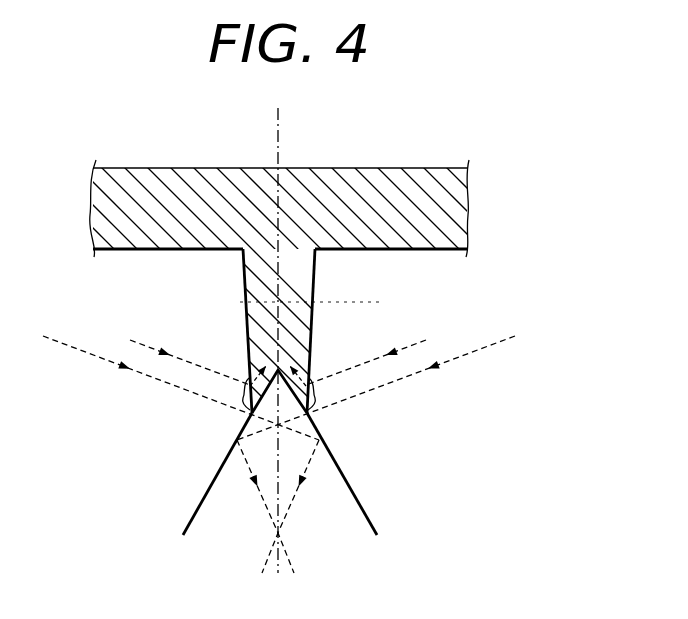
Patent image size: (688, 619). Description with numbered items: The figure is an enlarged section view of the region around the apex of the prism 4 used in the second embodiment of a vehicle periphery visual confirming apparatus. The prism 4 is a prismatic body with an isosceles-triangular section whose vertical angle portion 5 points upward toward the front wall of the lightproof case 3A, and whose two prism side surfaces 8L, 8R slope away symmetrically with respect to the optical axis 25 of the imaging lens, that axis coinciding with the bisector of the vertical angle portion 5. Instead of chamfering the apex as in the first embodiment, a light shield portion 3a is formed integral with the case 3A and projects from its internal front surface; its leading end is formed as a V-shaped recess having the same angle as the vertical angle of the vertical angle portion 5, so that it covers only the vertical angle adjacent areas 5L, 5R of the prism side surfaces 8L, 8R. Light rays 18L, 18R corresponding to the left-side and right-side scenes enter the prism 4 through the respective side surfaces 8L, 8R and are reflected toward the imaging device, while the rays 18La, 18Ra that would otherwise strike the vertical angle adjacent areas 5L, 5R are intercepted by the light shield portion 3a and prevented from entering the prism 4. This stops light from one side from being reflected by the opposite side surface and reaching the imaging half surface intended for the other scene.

The lightproof case 3A is at (434, 178).
The light shield portion 3a is at (306, 272).
The optical axis 25 is at (279, 142).
The vertical angle portion 5 is at (262, 427).
The left vertical angle adjacent area 5L is at (250, 393).
The right vertical angle adjacent area 5R is at (310, 393).
The left-side light rays 18L is at (75, 348).
The right-side light rays 18R is at (485, 348).
The left stray light rays 18La is at (130, 340).
The right stray light rays 18Ra is at (426, 340).
The left prism side surface 8L is at (205, 497).
The right prism side surface 8R is at (356, 497).
The prism 4 is at (340, 452).